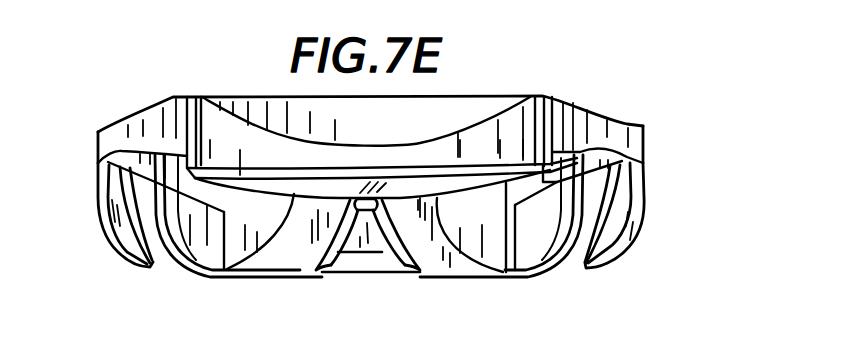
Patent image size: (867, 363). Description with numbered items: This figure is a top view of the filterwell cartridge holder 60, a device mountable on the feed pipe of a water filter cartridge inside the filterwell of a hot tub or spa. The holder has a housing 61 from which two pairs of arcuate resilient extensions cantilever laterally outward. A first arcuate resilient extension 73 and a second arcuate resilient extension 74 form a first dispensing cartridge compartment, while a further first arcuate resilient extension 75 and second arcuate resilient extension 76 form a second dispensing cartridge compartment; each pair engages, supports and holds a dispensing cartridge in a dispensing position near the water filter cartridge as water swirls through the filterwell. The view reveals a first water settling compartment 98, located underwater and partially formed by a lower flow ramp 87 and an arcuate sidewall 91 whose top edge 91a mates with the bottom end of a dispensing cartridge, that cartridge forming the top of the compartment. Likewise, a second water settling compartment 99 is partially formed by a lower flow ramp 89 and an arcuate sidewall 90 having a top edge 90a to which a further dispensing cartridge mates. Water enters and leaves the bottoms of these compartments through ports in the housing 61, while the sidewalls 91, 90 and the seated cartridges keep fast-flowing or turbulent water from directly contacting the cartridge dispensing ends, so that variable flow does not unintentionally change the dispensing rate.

The filterwell cartridge holder 60 is at (609, 101).
The housing 61 is at (627, 124).
The first arcuate resilient extension 73 is at (140, 263).
The second arcuate resilient extension 74 is at (328, 273).
The first arcuate resilient extension 75 is at (398, 265).
The second arcuate resilient extension 76 is at (622, 250).
The lower flow ramp 87 is at (152, 186).
The lower flow ramp 89 is at (560, 196).
The arcuate sidewall 90 is at (555, 266).
The top edge 90a is at (498, 275).
The arcuate sidewall 91 is at (192, 278).
The top edge 91a is at (180, 268).
The first water settling compartment 98 is at (264, 220).
The second water settling compartment 99 is at (488, 221).